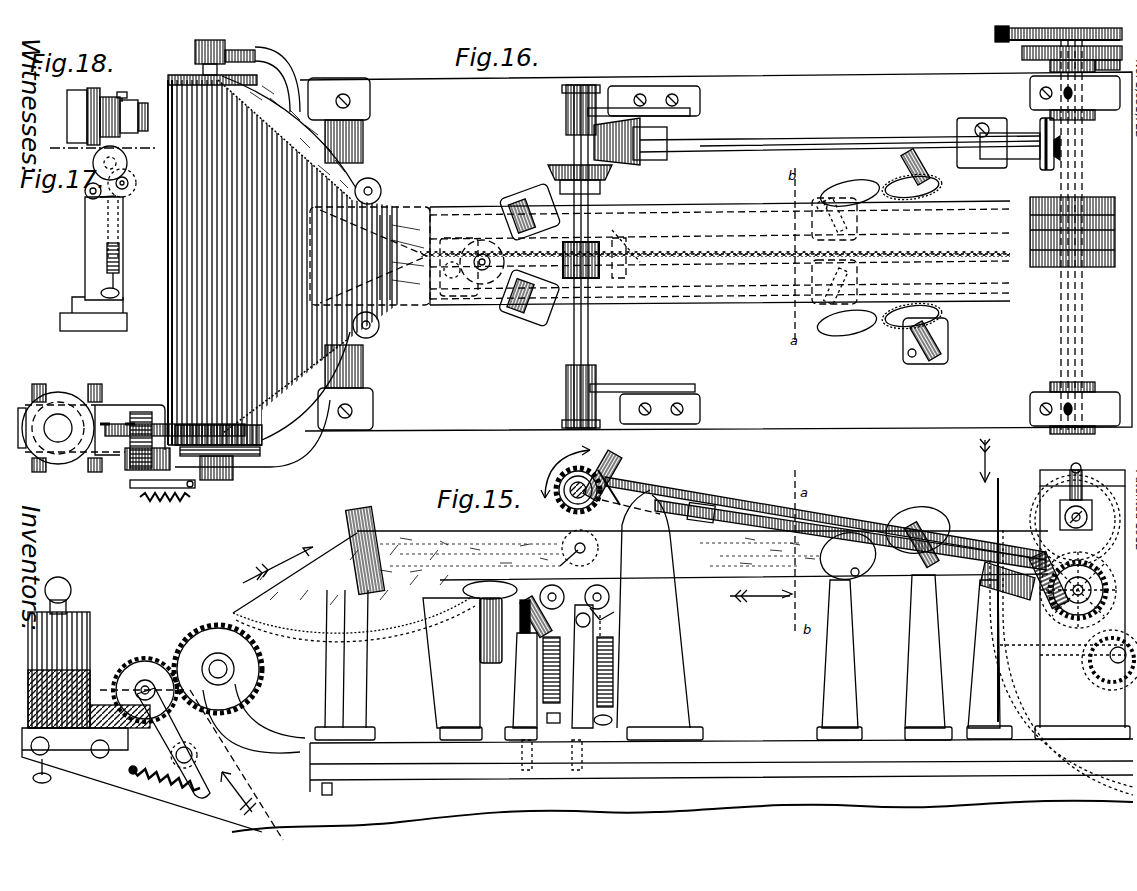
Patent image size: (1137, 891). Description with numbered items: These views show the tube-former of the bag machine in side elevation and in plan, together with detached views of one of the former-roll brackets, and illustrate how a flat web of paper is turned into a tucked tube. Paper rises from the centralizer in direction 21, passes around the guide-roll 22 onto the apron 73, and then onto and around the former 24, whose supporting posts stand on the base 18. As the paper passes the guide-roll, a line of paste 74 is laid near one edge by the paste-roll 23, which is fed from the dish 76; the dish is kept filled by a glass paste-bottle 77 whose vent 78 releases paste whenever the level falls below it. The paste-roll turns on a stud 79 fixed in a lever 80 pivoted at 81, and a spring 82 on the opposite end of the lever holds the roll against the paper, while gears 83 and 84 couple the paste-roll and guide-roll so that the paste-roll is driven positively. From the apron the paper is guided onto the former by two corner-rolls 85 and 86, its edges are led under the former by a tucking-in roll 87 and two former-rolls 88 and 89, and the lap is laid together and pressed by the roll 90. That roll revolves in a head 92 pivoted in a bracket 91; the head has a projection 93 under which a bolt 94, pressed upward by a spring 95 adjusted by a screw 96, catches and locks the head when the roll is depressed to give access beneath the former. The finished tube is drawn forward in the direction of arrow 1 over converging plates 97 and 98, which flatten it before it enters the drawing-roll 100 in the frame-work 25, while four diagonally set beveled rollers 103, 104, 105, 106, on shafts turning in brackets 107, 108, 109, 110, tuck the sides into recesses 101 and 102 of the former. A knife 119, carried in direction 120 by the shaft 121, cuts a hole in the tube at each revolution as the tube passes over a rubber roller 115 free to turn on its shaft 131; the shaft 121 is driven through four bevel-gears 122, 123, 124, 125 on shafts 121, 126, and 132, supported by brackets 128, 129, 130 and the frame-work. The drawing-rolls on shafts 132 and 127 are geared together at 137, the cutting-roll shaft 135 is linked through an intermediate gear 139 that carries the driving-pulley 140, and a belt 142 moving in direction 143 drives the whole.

In FIG. 15, the arrow 1 is at (751, 605).
In FIG. 15, the base 18 is at (682, 785).
In FIG. 15, the direction of paper travel 21 is at (152, 765).
In FIG. 16, the guide-roll 22 is at (190, 76).
In FIG. 15, the guide-roll 22 is at (250, 700).
In FIG. 16, the paste-roll 23 is at (155, 410).
In FIG. 15, the paste-roll 23 is at (148, 660).
In FIG. 16, the former 24 is at (660, 253).
In FIG. 15, the former 24 is at (702, 555).
In FIG. 16, the frame-work 25 is at (1075, 255).
In FIG. 15, the frame-work 25 is at (1065, 604).
In FIG. 16, the apron 73 is at (284, 271).
In FIG. 15, the apron 73 is at (248, 607).
In FIG. 16, the line of paste 74 is at (287, 258).
In FIG. 15, the line of paste 74 is at (354, 593).
In FIG. 16, the dish 76 is at (113, 404).
In FIG. 15, the dish 76 is at (120, 707).
In FIG. 16, the paste-bottle 77 is at (60, 428).
In FIG. 15, the paste-bottle 77 is at (72, 652).
In FIG. 16, the vent 78 is at (118, 405).
In FIG. 16, the stud 79 is at (138, 410).
In FIG. 15, the stud 79 is at (135, 690).
In FIG. 16, the lever 80 is at (128, 490).
In FIG. 15, the lever 80 is at (173, 743).
In FIG. 16, the pivot 81 is at (196, 488).
In FIG. 15, the pivot 81 is at (192, 755).
In FIG. 16, the spring 82 is at (165, 505).
In FIG. 15, the spring 82 is at (164, 784).
In FIG. 16, the gear 83 is at (174, 447).
In FIG. 15, the gear 83 is at (142, 682).
In FIG. 16, the gear 84 is at (228, 440).
In FIG. 15, the gear 84 is at (218, 669).
In FIG. 16, the corner-roll 85 is at (376, 326).
In FIG. 15, the corner-roll 85 is at (376, 512).
In FIG. 16, the corner-roll 86 is at (378, 187).
In FIG. 16, the tucking-in roll 87 is at (472, 267).
In FIG. 15, the tucking-in roll 87 is at (470, 660).
In FIG. 16, the former-roll 88 is at (529, 301).
In FIG. 15, the former-roll 88 is at (534, 676).
In FIG. 16, the former-roll 89 is at (522, 192).
In FIG. 18, the roll 90 is at (138, 112).
In FIG. 17, the roll 90 is at (136, 183).
In FIG. 16, the roll 90 is at (638, 256).
In FIG. 15, the roll 90 is at (597, 594).
In FIG. 18, the bracket 91 is at (83, 116).
In FIG. 17, the bracket 91 is at (93, 264).
In FIG. 15, the bracket 91 is at (637, 687).
In FIG. 18, the head 92 is at (127, 99).
In FIG. 17, the head 92 is at (127, 162).
In FIG. 15, the head 92 is at (588, 606).
In FIG. 17, the projection 93 is at (101, 196).
In FIG. 15, the projection 93 is at (598, 618).
In FIG. 17, the bolt 94 is at (120, 227).
In FIG. 15, the bolt 94 is at (613, 612).
In FIG. 17, the spring 95 is at (119, 253).
In FIG. 15, the spring 95 is at (614, 648).
In FIG. 17, the screw 96 is at (119, 291).
In FIG. 15, the screw 96 is at (612, 716).
In FIG. 15, the converging plate 97 is at (720, 576).
In FIG. 16, the converging plate 98 is at (727, 270).
In FIG. 15, the converging plate 98 is at (718, 494).
In FIG. 16, the drawing-roll 100 is at (1072, 235).
In FIG. 15, the drawing-roll 100 is at (1075, 520).
In FIG. 16, the recess 101 is at (962, 285).
In FIG. 15, the recess 101 is at (760, 552).
In FIG. 16, the recess 102 is at (967, 209).
In FIG. 16, the beveled roller 103 is at (846, 323).
In FIG. 15, the beveled roller 103 is at (848, 556).
In FIG. 16, the beveled roller 104 is at (849, 193).
In FIG. 16, the beveled roller 105 is at (912, 316).
In FIG. 15, the beveled roller 105 is at (917, 535).
In FIG. 16, the beveled roller 106 is at (912, 187).
In FIG. 16, the bracket 107 is at (834, 282).
In FIG. 15, the bracket 107 is at (839, 660).
In FIG. 16, the bracket 108 is at (834, 218).
In FIG. 16, the bracket 109 is at (925, 341).
In FIG. 15, the bracket 109 is at (928, 657).
In FIG. 16, the bracket 110 is at (923, 167).
In FIG. 15, the rubber roller 115 is at (580, 544).
In FIG. 16, the knife 119 is at (600, 246).
In FIG. 15, the knife 119 is at (598, 462).
In FIG. 15, the direction of rotation 120 is at (555, 472).
In FIG. 16, the shaft 121 is at (592, 256).
In FIG. 16, the bevel-gear 122 is at (584, 180).
In FIG. 15, the bevel-gear 122 is at (569, 494).
In FIG. 16, the bevel-gear 123 is at (617, 147).
In FIG. 15, the bevel-gear 123 is at (629, 489).
In FIG. 16, the bevel-gear 124 is at (1010, 151).
In FIG. 15, the bevel-gear 124 is at (1024, 584).
In FIG. 16, the bevel-gear 125 is at (1044, 161).
In FIG. 15, the bevel-gear 125 is at (1078, 598).
In FIG. 16, the shaft 126 is at (836, 141).
In FIG. 15, the shaft 126 is at (850, 533).
In FIG. 16, the shaft 127 is at (1077, 144).
In FIG. 15, the shaft 127 is at (1083, 496).
In FIG. 16, the bracket 128 is at (618, 226).
In FIG. 15, the bracket 128 is at (653, 609).
In FIG. 16, the bracket 129 is at (644, 101).
In FIG. 16, the bracket 130 is at (982, 143).
In FIG. 15, the bracket 130 is at (989, 659).
In FIG. 15, the shaft 131 is at (565, 563).
In FIG. 15, the shaft 132 is at (1078, 590).
In FIG. 16, the shaft 135 is at (1109, 65).
In FIG. 16, the gears 137 is at (1020, 56).
In FIG. 15, the intermediate gear 139 is at (1109, 662).
In FIG. 16, the driving-pulley 140 is at (1000, 42).
In FIG. 15, the driving-pulley 140 is at (1061, 662).
In FIG. 16, the belt 142 is at (995, 32).
In FIG. 15, the belt 142 is at (1013, 600).
In FIG. 15, the direction of belt travel 143 is at (967, 460).